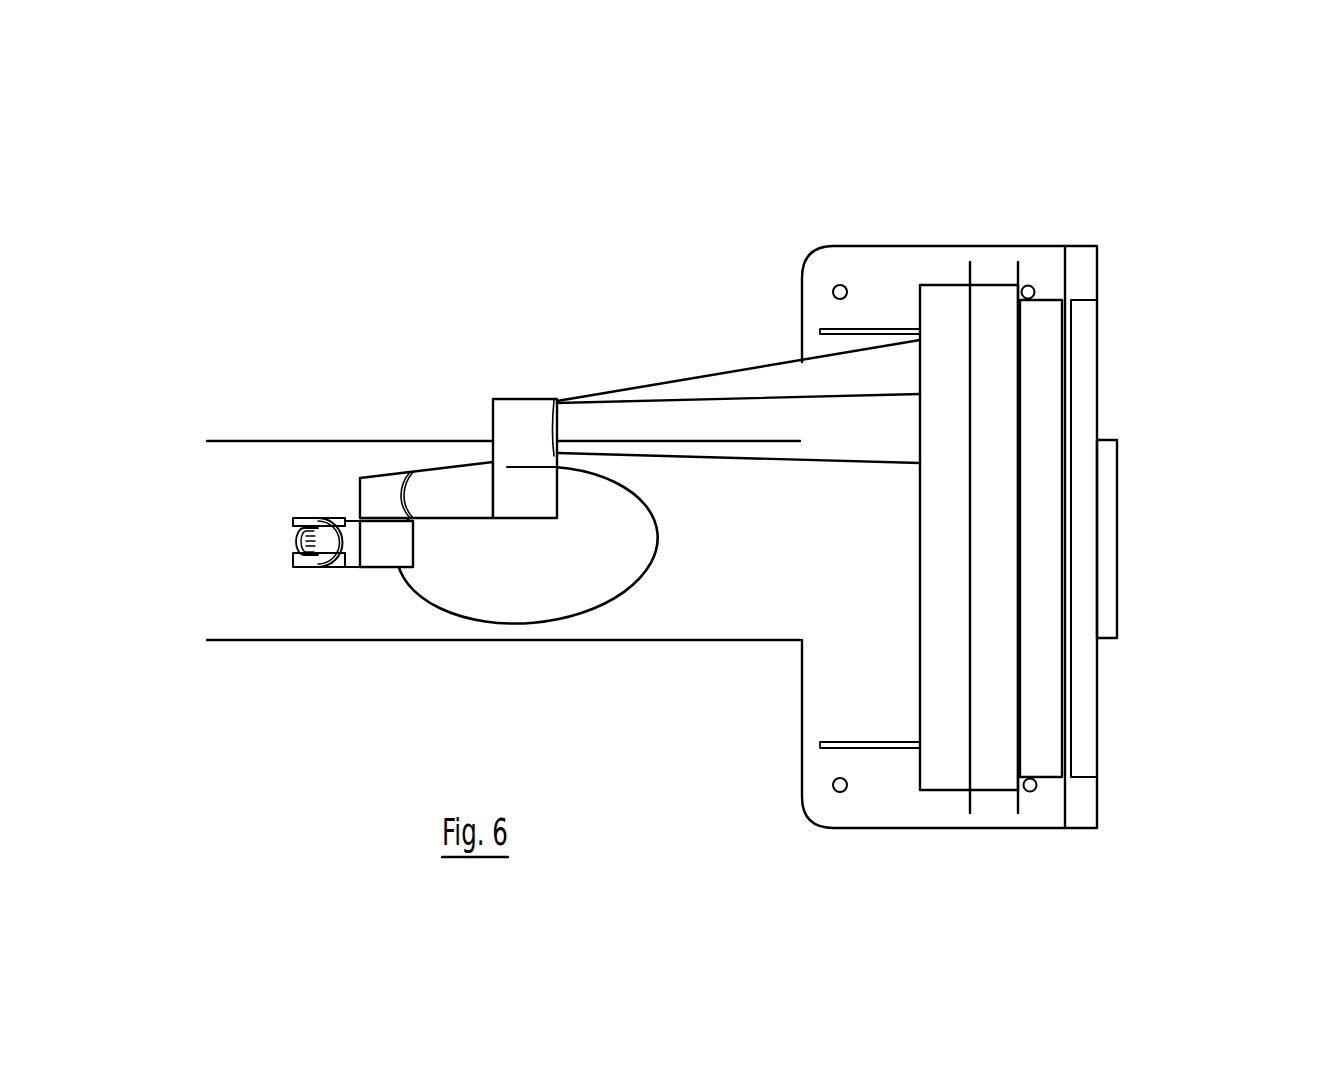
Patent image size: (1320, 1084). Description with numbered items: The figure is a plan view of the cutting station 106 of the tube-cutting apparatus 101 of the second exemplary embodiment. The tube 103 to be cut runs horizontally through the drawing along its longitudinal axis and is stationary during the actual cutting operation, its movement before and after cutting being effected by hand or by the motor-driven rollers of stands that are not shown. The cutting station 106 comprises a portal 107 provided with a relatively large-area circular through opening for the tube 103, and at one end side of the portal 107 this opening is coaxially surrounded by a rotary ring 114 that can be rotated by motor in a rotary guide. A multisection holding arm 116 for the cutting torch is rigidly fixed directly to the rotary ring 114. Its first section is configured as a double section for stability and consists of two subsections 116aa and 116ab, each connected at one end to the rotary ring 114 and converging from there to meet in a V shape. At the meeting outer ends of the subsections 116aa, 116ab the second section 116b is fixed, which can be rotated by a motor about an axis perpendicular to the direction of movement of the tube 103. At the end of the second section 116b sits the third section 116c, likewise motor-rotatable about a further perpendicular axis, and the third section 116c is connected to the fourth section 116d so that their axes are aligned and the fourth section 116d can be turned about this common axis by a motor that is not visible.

The apparatus 101 is at (228, 237).
The tube 103 is at (247, 580).
The cutting station 106 is at (1145, 762).
The portal 107 is at (1050, 803).
The rotary ring 114 is at (934, 307).
The holding arm 116 is at (705, 420).
The subsection 116aa is at (783, 427).
The subsection 116ab is at (672, 390).
The second section 116b is at (455, 490).
The third section 116c is at (352, 557).
The fourth section 116d is at (322, 528).